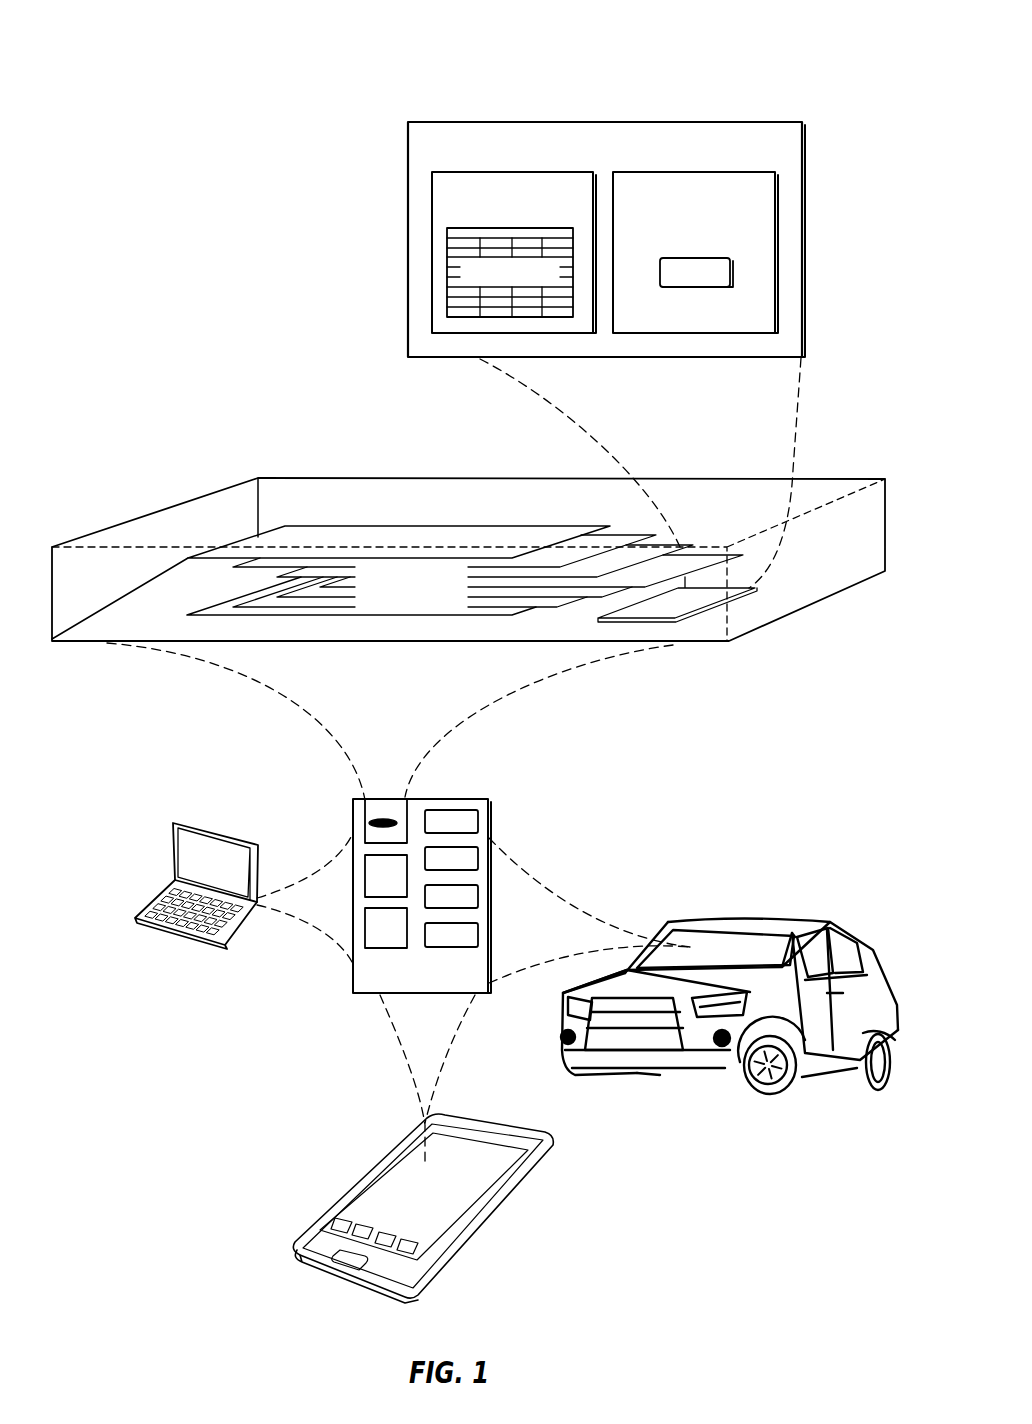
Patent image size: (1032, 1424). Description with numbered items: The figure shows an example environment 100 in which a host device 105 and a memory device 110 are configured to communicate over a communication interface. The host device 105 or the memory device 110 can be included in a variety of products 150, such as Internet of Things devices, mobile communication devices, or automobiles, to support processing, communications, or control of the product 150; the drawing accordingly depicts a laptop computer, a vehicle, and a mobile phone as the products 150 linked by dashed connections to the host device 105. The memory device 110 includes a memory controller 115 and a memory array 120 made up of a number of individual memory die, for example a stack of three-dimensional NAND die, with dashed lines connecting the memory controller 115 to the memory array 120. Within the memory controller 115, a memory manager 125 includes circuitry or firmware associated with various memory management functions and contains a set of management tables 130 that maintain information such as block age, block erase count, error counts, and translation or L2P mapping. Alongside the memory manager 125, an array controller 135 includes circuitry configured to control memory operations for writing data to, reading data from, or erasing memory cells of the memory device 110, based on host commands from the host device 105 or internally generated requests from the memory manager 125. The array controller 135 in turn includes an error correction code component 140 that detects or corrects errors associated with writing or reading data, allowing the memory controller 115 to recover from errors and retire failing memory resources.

The environment 100 is at (802, 33).
The host device 105 is at (353, 805).
The memory device 110 is at (200, 496).
The memory controller 115 is at (408, 124).
The memory array 120 is at (466, 526).
The memory manager 125 is at (432, 207).
The management tables 130 is at (447, 270).
The array controller 135 is at (777, 205).
The error correction code (ECC) component 140 is at (731, 273).
The products 150 is at (177, 823).